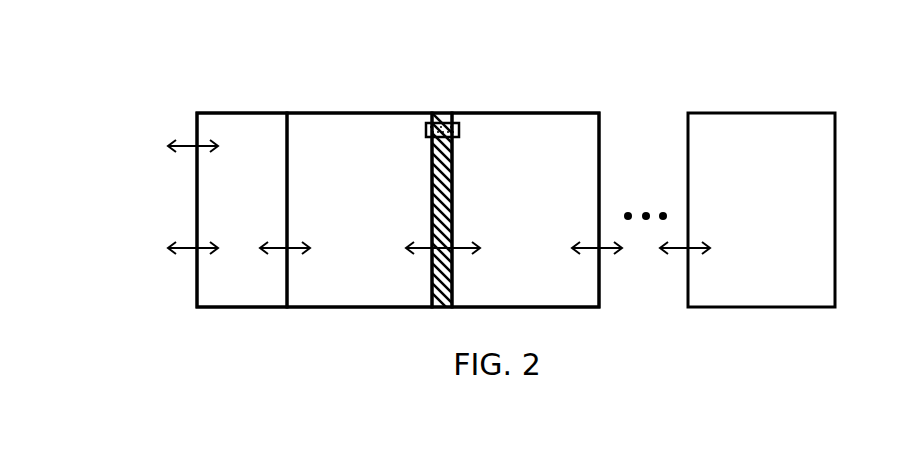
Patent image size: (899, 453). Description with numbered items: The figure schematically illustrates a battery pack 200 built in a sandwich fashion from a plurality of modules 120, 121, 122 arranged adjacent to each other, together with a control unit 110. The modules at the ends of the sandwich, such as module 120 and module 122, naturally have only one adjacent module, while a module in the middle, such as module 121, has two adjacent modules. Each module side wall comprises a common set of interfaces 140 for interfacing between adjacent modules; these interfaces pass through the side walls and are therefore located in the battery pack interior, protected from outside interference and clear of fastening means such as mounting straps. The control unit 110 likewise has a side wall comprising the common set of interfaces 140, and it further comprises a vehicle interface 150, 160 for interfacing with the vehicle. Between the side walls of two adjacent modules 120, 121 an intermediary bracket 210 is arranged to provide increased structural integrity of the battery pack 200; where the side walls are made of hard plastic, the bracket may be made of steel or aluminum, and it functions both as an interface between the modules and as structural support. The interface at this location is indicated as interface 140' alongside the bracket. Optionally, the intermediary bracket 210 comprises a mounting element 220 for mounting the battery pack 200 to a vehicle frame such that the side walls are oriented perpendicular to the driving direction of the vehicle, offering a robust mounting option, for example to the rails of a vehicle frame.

The battery pack 200 is at (172, 62).
The control unit 110 is at (224, 219).
The module 120 is at (343, 219).
The module 121 is at (508, 219).
The module 122 is at (744, 219).
The common set of interfaces 140 is at (473, 266).
The modified region width 140' is at (430, 266).
The vehicle interface 150 is at (182, 162).
The vehicle interface 160 is at (182, 266).
The intermediary bracket 210 is at (455, 168).
The mounting element 220 is at (455, 120).